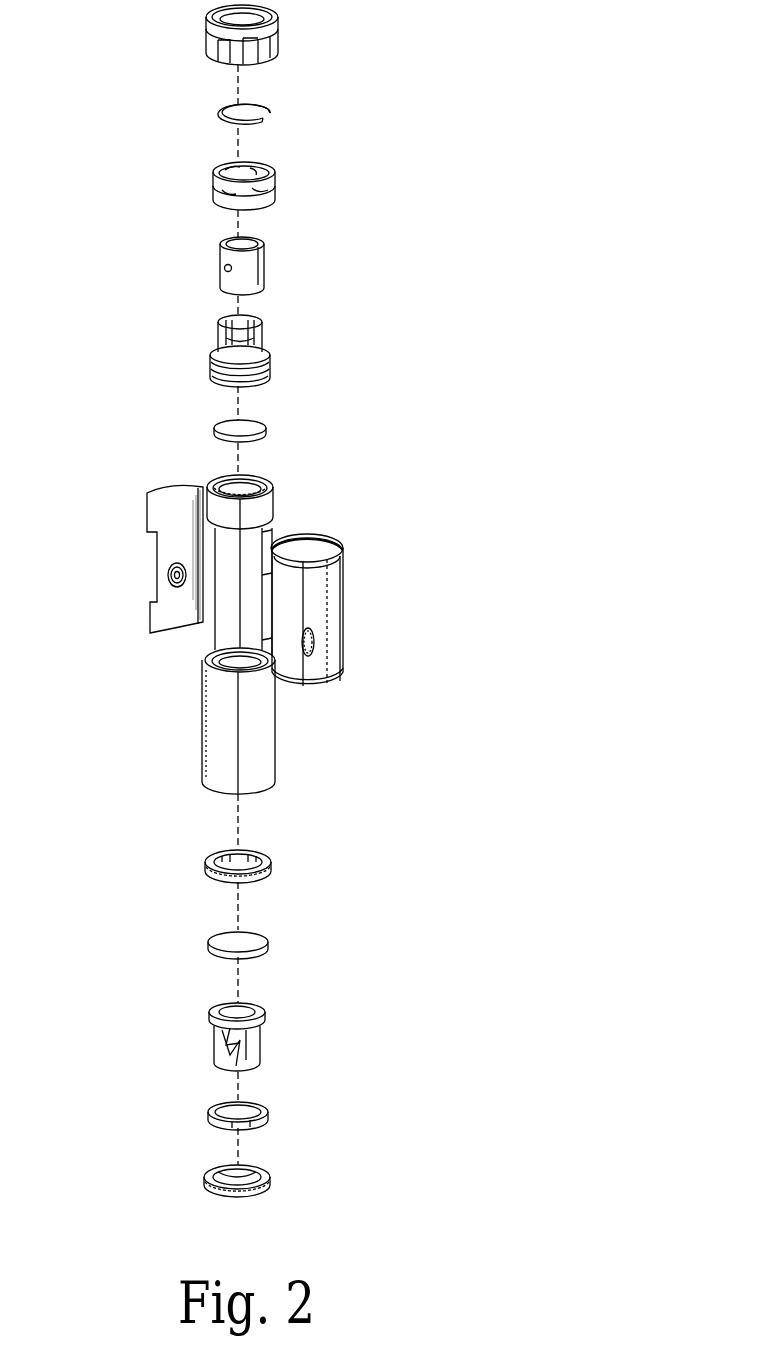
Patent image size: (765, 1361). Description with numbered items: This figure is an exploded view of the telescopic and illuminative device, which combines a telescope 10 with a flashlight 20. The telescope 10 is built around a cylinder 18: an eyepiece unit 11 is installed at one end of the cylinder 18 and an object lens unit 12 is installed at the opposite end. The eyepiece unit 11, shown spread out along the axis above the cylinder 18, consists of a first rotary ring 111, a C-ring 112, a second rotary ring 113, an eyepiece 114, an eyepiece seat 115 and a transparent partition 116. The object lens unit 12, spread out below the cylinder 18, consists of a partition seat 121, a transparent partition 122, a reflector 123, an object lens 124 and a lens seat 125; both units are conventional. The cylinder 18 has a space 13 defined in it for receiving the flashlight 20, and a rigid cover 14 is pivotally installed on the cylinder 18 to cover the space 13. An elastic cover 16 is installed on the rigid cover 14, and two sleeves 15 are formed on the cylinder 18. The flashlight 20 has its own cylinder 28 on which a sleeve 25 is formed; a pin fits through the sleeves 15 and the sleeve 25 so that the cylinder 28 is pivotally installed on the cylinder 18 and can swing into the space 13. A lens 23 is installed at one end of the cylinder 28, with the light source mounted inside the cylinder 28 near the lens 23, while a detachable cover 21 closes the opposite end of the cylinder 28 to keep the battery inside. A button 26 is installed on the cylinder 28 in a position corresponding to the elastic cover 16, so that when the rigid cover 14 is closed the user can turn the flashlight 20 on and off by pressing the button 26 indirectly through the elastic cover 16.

The telescope 10 is at (244, 636).
The eyepiece unit 11 is at (390, 28).
The first rotary ring 111 is at (281, 35).
The C-ring 112 is at (272, 112).
The second rotary ring 113 is at (277, 194).
The eyepiece 114 is at (266, 273).
The eyepiece seat 115 is at (272, 353).
The transparent partition 116 is at (264, 423).
The object lens unit 12 is at (383, 860).
The partition seat 121 is at (273, 872).
The transparent partition 122 is at (270, 950).
The reflector 123 is at (263, 1035).
The object lens 124 is at (270, 1120).
The lens seat 125 is at (272, 1178).
The space 13 is at (233, 623).
The rigid cover 14 is at (130, 558).
The sleeves 15 is at (277, 528).
The elastic cover 16 is at (165, 572).
The cylinder 18 is at (255, 745).
The flashlight 20 is at (424, 634).
The cover 21 is at (280, 547).
The lens 23 is at (308, 682).
The sleeve 25 is at (267, 585).
The button 26 is at (315, 638).
The cylinder 28 is at (318, 605).